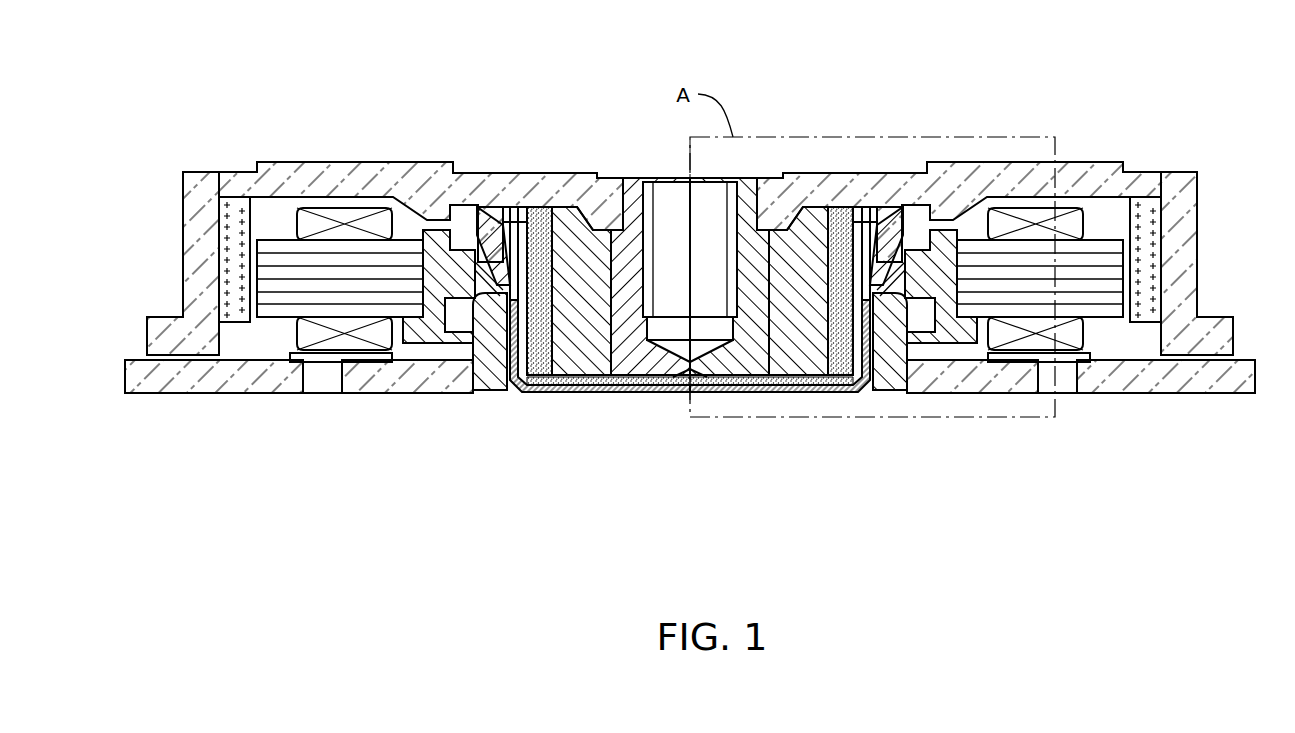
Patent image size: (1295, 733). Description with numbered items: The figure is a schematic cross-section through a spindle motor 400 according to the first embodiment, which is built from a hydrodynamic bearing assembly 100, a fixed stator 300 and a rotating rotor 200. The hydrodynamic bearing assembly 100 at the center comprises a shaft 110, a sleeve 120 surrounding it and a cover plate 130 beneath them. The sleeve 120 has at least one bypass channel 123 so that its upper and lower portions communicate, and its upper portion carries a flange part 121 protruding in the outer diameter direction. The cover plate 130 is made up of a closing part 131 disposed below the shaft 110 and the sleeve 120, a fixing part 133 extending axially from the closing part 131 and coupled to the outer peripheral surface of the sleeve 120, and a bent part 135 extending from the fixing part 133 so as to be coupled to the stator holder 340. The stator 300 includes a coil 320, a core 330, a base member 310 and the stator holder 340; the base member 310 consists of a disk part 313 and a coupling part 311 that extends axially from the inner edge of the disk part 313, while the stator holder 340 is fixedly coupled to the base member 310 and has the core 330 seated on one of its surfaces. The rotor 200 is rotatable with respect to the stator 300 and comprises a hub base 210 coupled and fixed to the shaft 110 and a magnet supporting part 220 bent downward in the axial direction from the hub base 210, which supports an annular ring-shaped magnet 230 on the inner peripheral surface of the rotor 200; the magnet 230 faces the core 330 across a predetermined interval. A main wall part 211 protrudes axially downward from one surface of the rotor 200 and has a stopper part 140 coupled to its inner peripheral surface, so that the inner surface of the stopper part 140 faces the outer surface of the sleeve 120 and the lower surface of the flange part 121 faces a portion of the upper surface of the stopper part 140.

The spindle motor 400 is at (586, 43).
The hydrodynamic bearing assembly 100 is at (676, 409).
The shaft 110 is at (742, 360).
The sleeve 120 is at (787, 360).
The flange part 121 is at (877, 226).
The bypass channel 123 is at (847, 226).
The cover plate 130 is at (918, 508).
The closing part 131 is at (813, 387).
The fixing part 133 is at (867, 380).
The bent part 135 is at (893, 340).
The stopper part 140 is at (897, 210).
The rotor 200 is at (1142, 162).
The hub base 210 is at (1008, 178).
The main wall part 211 is at (926, 230).
The magnet supporting part 220 is at (1197, 196).
The magnet 230 is at (1162, 256).
The stator 300 is at (955, 553).
The base member 310 is at (937, 508).
The coupling part 311 is at (898, 340).
The disk part 313 is at (915, 335).
The coil 320 is at (1017, 342).
The core 330 is at (1097, 300).
The stator holder 340 is at (1000, 374).